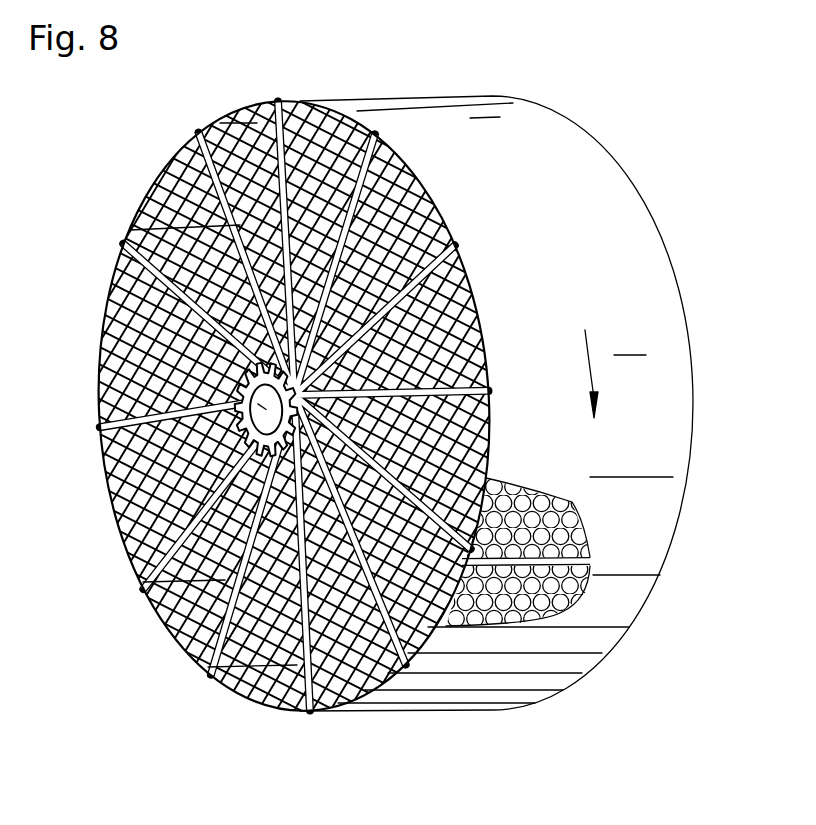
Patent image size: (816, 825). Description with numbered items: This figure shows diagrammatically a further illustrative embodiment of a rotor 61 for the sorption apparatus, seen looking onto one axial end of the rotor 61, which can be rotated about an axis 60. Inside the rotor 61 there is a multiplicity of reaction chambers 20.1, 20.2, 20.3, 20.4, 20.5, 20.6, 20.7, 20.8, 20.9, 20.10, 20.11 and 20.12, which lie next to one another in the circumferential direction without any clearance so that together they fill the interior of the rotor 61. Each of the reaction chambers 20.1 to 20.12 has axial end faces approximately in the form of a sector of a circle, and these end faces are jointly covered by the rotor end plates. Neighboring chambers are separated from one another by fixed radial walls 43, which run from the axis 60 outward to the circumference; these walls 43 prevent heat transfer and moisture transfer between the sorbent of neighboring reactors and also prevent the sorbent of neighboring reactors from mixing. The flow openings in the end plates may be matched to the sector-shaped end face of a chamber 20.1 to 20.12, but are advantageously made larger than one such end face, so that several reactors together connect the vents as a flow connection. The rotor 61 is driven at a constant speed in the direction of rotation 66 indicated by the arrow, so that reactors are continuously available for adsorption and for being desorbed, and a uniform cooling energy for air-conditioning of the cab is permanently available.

The reaction chamber 20.1 is at (484, 326).
The reaction chamber 20.2 is at (425, 191).
The reaction chamber 20.3 is at (340, 135).
The reaction chamber 20.4 is at (258, 130).
The reaction chamber 20.5 is at (182, 205).
The reaction chamber 20.6 is at (133, 313).
The reaction chamber 20.7 is at (148, 467).
The reaction chamber 20.8 is at (190, 604).
The reaction chamber 20.9 is at (258, 672).
The reaction chamber 20.10 is at (338, 684).
The reaction chamber 20.11 is at (432, 640).
The reaction chamber 20.12 is at (478, 430).
The radial wall 43 is at (384, 146).
The axis 60 is at (245, 392).
The rotor 61 is at (630, 343).
The direction of rotation 66 is at (590, 362).